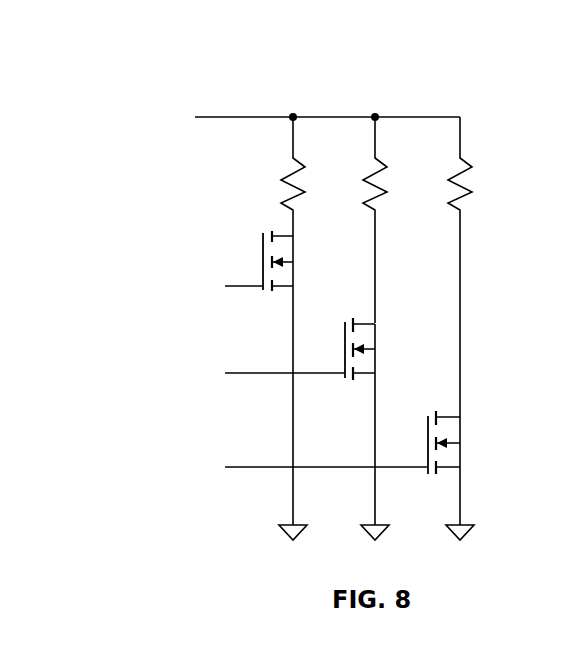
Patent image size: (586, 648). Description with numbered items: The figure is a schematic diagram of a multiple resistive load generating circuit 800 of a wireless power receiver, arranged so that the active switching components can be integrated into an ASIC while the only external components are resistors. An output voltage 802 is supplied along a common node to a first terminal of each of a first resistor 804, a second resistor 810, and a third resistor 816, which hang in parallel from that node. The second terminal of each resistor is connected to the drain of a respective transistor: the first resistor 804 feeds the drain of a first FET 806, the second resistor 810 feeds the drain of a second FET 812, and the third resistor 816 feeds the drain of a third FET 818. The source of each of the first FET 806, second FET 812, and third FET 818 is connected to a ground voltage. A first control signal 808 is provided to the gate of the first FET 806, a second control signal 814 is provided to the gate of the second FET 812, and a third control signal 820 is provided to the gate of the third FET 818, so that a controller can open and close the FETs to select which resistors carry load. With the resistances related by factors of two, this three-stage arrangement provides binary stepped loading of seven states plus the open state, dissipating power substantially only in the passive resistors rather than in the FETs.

The multiple resistive load generating circuit 800 is at (125, 66).
The voltage Vout 802 is at (173, 102).
The first resistor R1 804 is at (307, 160).
The first FET M1 806 is at (265, 228).
The first control signal 808 is at (192, 270).
The second resistor R2 810 is at (387, 160).
The second FET M2 812 is at (394, 332).
The second control signal 814 is at (192, 357).
The third resistor R3 816 is at (470, 157).
The third FET M3 818 is at (478, 420).
The third control signal 820 is at (192, 452).